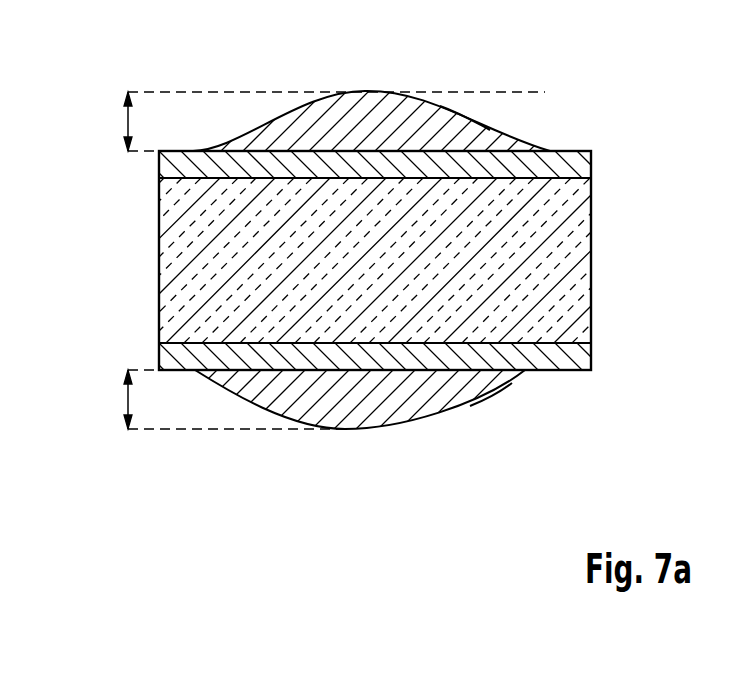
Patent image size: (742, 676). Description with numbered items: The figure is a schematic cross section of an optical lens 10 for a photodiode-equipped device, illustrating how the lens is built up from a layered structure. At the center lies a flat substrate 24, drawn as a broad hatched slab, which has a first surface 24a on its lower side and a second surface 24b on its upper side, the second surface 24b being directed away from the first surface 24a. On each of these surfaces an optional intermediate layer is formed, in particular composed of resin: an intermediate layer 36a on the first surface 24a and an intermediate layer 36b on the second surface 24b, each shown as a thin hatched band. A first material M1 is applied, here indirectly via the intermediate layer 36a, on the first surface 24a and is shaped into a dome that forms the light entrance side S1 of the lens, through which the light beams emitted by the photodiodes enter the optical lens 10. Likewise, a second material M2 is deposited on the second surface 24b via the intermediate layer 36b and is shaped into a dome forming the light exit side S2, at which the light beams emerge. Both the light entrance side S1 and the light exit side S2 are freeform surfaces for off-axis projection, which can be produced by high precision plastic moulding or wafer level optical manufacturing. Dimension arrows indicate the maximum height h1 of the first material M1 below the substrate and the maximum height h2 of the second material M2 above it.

The optical lens 10 is at (610, 159).
The substrate 24 is at (183, 262).
The first surface 24a is at (408, 345).
The second surface 24b is at (405, 176).
The intermediate layer 36a is at (352, 350).
The intermediate layer 36b is at (352, 165).
The first material M1 is at (295, 390).
The second material M2 is at (294, 126).
The light entrance side S1 is at (504, 390).
The light exit side S2 is at (485, 120).
The maximum height h1 is at (128, 402).
The maximum height h2 is at (128, 122).